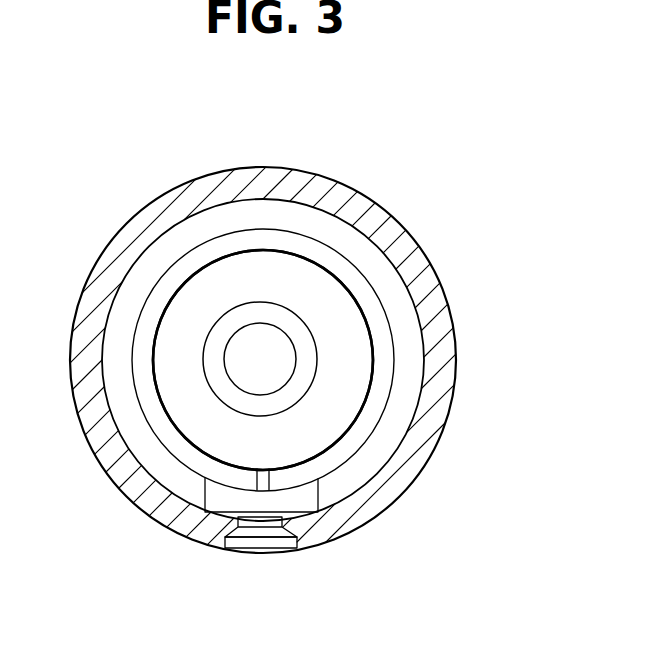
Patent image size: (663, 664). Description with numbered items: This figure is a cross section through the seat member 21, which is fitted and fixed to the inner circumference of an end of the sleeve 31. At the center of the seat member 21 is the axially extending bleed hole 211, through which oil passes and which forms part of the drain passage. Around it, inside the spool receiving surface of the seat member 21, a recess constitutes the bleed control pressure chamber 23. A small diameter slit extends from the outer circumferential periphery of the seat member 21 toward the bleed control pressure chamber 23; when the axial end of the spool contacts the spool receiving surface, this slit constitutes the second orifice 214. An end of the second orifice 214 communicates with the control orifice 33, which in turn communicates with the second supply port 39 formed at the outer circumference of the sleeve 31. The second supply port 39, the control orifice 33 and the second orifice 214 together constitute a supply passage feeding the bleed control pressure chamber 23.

The seat member 21 is at (342, 273).
The bleed hole 211 is at (260, 348).
The second orifice 214 is at (260, 488).
The bleed control pressure chamber 23 is at (359, 352).
The sleeve 31 is at (432, 388).
The control orifice 33 is at (267, 522).
The second supply port 39 is at (237, 543).